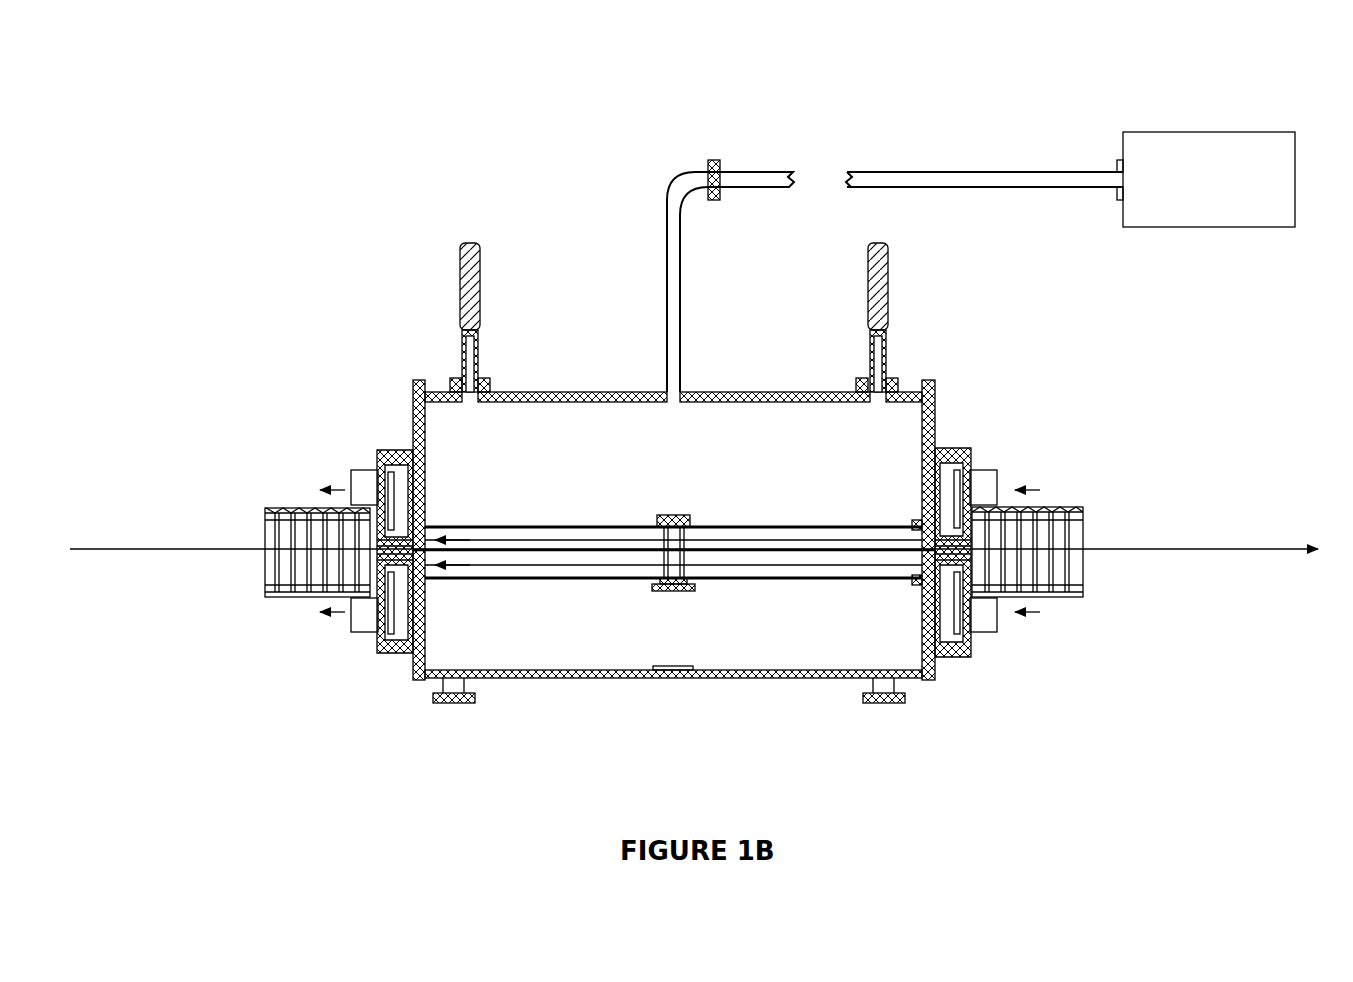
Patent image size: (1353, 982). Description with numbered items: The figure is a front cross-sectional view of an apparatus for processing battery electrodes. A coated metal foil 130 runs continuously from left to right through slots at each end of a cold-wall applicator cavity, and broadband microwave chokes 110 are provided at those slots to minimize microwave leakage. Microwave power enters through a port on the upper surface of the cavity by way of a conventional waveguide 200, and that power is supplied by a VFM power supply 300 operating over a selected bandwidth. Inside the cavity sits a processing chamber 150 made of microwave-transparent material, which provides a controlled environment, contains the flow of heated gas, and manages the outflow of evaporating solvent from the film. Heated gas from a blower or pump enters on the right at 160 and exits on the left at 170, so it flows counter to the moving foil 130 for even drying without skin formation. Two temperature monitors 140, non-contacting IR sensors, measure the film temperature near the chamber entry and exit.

The broadband microwave chokes 110 is at (263, 518).
The metal foil 130 is at (205, 546).
The temperature monitor 140 is at (455, 290).
The processing chamber 150 is at (638, 522).
The heated gas entry 160 is at (1030, 478).
The heated gas exit 170 is at (325, 482).
The waveguide 200 is at (700, 166).
The VFM power supply 300 is at (1120, 128).